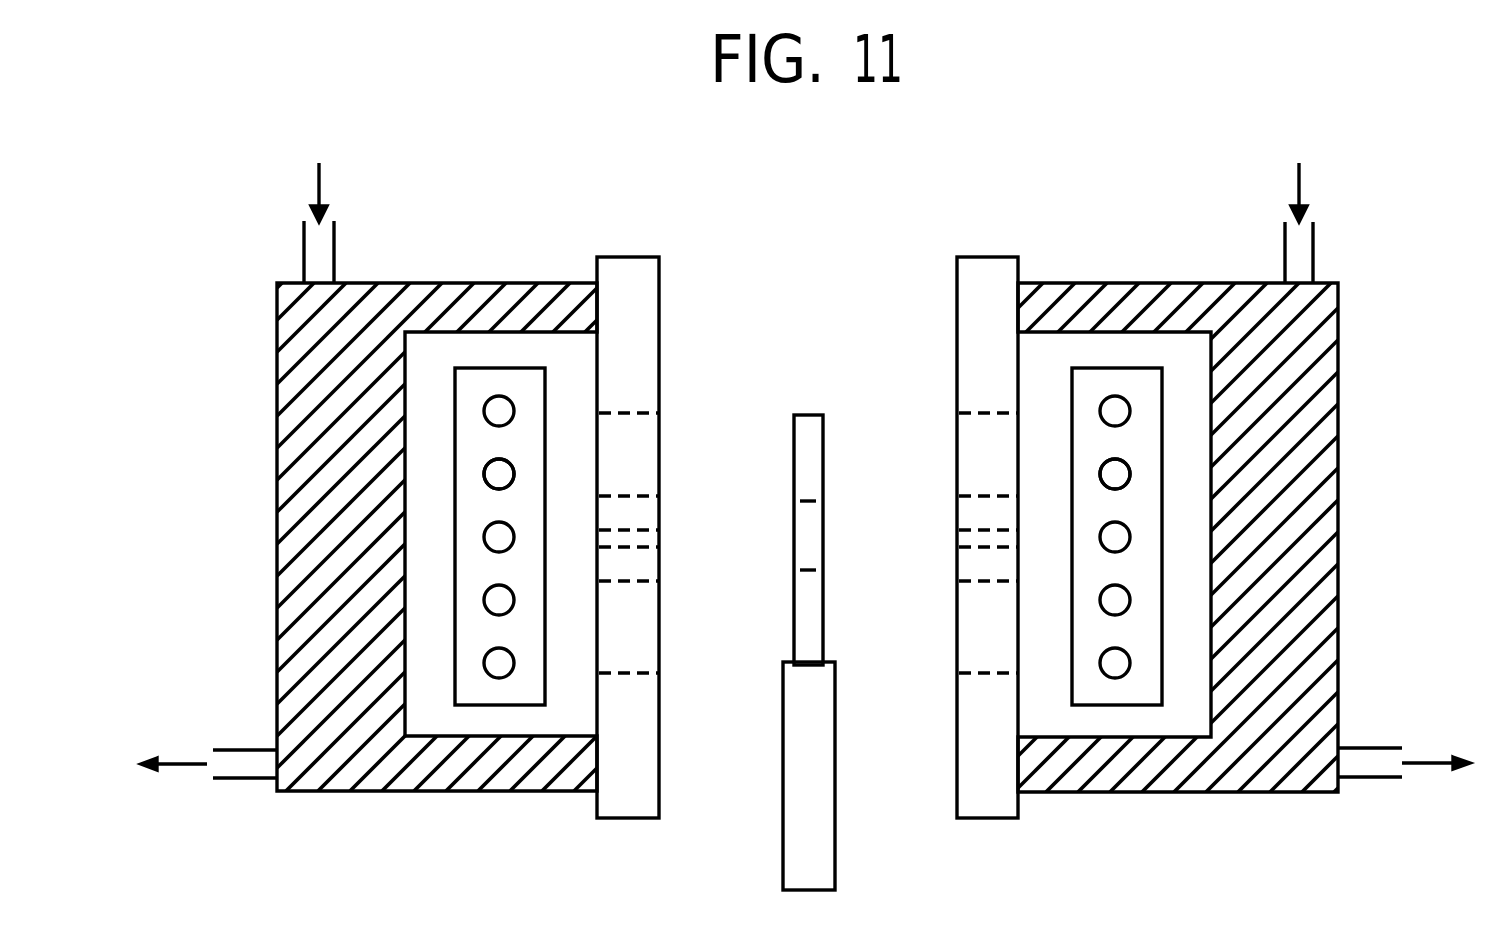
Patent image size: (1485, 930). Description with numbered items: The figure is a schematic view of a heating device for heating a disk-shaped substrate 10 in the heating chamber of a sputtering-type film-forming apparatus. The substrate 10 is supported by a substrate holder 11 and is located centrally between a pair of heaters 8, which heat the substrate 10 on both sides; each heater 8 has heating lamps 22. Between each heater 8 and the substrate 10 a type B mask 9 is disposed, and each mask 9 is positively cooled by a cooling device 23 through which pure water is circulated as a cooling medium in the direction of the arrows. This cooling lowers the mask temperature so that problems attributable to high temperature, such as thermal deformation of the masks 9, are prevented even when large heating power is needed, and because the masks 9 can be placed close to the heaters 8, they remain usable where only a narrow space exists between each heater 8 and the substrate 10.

The heater 8 is at (493, 382).
The mask 9 is at (642, 298).
The substrate 10 is at (817, 448).
The substrate holder 11 is at (817, 733).
The heating lamp 22 is at (500, 470).
The cooling device 23 is at (303, 502).